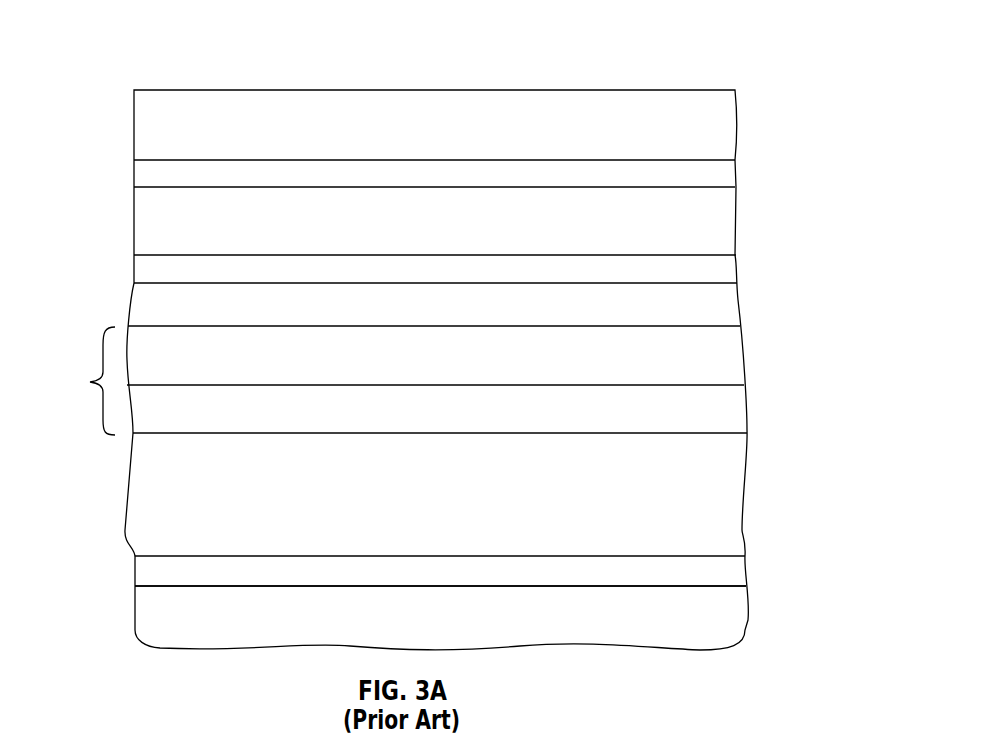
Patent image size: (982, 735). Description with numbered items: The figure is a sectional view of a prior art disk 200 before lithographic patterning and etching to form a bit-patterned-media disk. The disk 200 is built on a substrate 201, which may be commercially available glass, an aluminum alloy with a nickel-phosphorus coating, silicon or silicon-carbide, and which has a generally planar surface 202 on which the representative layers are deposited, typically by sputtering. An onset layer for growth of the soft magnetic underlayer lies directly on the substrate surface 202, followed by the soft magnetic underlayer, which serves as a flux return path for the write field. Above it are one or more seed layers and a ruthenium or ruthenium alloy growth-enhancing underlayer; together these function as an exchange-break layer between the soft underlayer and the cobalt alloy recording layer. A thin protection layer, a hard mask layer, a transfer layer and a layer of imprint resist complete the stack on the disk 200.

The disk 200 is at (430, 330).
The substrate 201 is at (735, 613).
The planar surface 202 is at (725, 585).